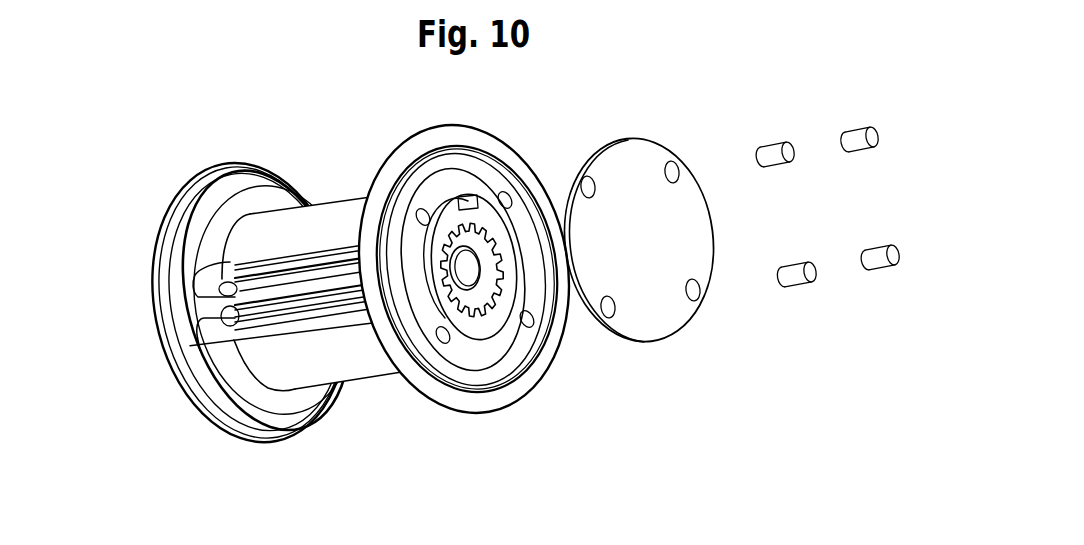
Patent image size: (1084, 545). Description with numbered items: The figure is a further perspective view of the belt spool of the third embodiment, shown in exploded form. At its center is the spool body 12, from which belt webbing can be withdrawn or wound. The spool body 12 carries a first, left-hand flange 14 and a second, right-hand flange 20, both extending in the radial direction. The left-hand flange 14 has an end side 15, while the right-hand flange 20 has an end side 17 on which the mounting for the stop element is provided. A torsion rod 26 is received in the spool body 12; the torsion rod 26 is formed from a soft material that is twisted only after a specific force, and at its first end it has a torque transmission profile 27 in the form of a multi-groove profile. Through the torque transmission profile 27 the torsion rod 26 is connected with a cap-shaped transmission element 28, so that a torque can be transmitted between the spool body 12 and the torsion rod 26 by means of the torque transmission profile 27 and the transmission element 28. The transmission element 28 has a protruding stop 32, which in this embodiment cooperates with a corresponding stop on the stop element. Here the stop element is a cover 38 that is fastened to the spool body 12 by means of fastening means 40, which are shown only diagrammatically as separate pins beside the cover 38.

The spool body 12 is at (330, 377).
The left-hand flange 14 is at (233, 417).
The end side 15 is at (152, 256).
The end side 17 is at (443, 192).
The right-hand flange 20 is at (463, 405).
The torsion rod 26 is at (242, 299).
The torque transmission profile 27 is at (498, 297).
The transmission element 28 is at (483, 318).
The stop 32 is at (500, 214).
The cover 38 is at (632, 157).
The fastening means 40 is at (838, 132).